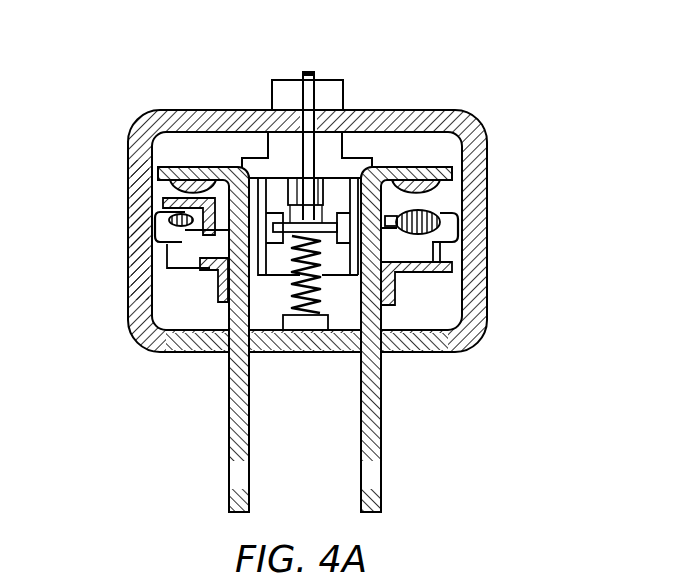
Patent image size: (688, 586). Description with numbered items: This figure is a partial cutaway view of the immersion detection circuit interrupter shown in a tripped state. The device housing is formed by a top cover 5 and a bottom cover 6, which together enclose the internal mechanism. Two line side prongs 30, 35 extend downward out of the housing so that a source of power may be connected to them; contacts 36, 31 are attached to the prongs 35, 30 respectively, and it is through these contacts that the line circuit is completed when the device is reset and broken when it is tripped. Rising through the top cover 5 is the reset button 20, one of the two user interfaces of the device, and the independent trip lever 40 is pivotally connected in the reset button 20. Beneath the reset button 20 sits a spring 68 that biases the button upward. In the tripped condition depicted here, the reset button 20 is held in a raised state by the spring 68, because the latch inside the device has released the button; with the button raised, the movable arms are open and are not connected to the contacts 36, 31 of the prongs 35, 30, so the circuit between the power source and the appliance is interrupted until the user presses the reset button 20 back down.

The top cover 5 is at (138, 120).
The bottom cover 6 is at (128, 276).
The reset button 20 is at (307, 72).
The line side prong 30 is at (381, 415).
The contact 31 is at (450, 267).
The line side prong 35 is at (229, 400).
The contact 36 is at (202, 266).
The trip lever 40 is at (330, 87).
The spring 68 is at (327, 297).